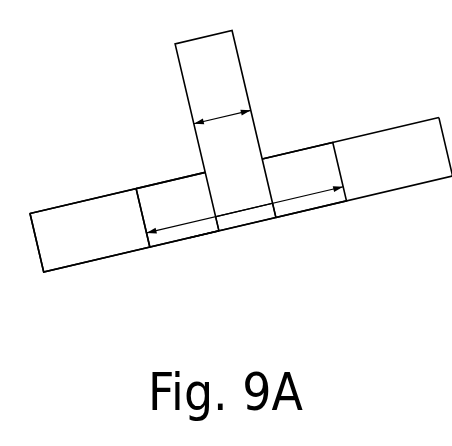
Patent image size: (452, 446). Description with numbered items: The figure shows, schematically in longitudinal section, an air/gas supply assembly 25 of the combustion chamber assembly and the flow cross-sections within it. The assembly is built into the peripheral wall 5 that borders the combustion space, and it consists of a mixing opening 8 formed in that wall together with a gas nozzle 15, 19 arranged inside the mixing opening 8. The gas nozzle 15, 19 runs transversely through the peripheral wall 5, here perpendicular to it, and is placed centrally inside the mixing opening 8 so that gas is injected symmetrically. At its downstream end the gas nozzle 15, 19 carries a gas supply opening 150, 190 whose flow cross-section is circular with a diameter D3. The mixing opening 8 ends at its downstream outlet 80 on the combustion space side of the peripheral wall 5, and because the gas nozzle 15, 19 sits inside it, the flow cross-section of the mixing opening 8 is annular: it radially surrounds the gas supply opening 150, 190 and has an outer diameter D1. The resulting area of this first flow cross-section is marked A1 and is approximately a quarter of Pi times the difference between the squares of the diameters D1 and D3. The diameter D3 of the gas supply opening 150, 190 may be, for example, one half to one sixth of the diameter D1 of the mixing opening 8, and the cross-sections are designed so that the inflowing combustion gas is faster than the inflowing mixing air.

The peripheral wall 5 is at (65, 222).
The mixing opening 8 is at (320, 157).
The gas nozzle 15 is at (159, 127).
The gas nozzle 19 is at (193, 67).
The air/gas supply assembly 25 is at (286, 92).
The outlet 80 is at (184, 242).
The gas supply opening 150 is at (289, 263).
The gas supply opening 190 is at (260, 227).
The first flow cross-section area A1 is at (209, 250).
The diameter of the mixing opening D1 is at (245, 210).
The diameter of the gas supply opening D3 is at (222, 106).